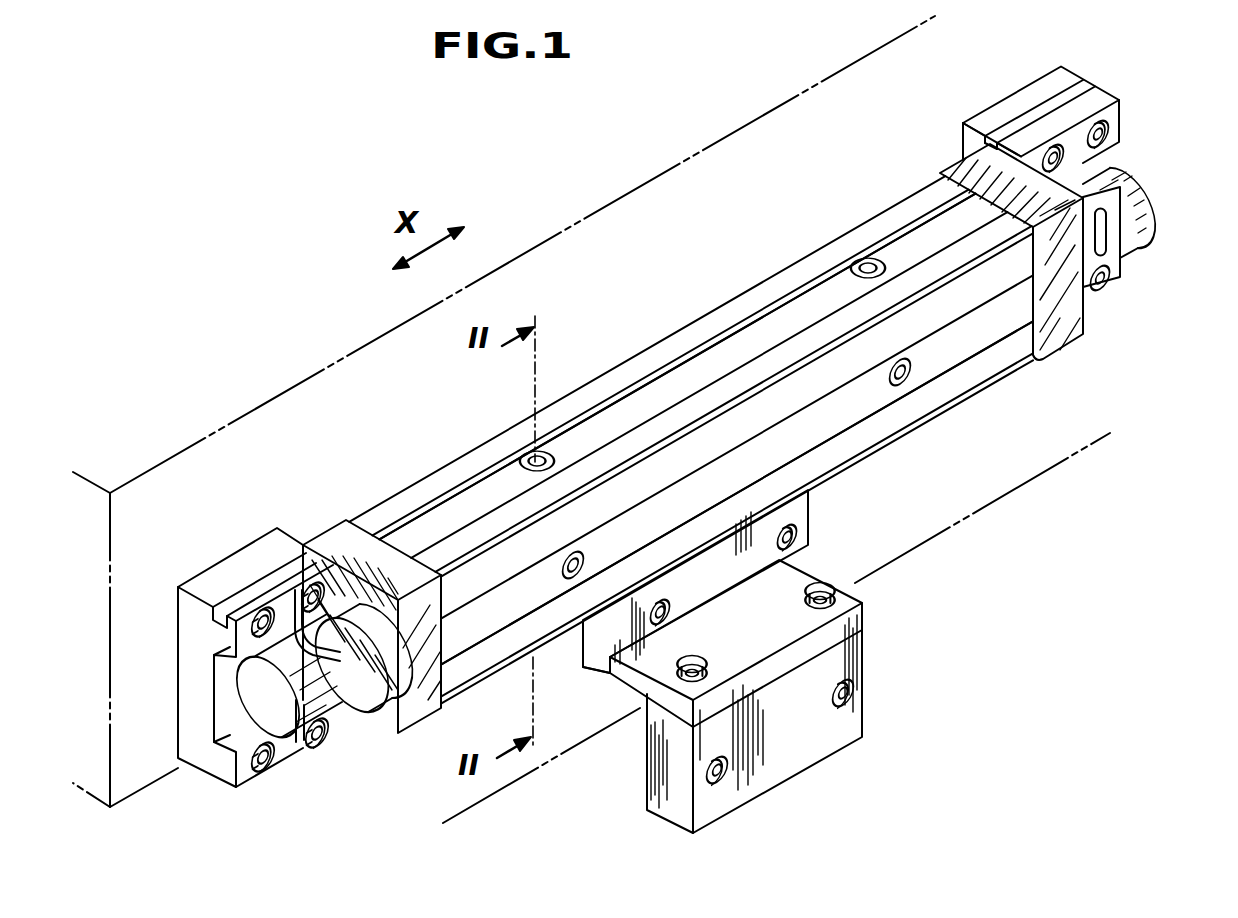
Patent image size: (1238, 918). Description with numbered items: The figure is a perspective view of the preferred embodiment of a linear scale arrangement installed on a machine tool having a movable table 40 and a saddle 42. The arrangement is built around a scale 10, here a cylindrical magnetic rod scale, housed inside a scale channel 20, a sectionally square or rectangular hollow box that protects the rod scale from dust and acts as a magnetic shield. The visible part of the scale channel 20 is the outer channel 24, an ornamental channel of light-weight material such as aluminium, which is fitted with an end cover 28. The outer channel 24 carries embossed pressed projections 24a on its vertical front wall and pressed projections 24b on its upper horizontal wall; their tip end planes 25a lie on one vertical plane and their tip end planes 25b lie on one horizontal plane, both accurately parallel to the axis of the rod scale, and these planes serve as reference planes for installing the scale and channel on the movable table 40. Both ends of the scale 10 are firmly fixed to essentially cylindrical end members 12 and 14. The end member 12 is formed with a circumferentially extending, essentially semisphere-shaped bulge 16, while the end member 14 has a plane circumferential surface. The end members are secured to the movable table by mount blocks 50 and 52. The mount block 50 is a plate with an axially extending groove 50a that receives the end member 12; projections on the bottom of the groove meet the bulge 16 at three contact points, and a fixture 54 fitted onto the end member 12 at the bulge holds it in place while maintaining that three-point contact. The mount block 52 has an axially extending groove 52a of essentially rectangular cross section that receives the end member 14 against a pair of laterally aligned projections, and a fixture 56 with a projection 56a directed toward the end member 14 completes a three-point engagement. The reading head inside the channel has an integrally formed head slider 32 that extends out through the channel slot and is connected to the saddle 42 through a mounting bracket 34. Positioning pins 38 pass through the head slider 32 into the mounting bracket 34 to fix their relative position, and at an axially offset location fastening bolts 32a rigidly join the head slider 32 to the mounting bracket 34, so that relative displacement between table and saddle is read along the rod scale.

The scale 10 is at (666, 435).
The end member 12 is at (247, 682).
The end member 14 is at (1130, 177).
The bulge 16 is at (355, 618).
The scale channel 20 is at (691, 429).
The outer channel 24 is at (623, 373).
The pressed projections 24a is at (562, 572).
The pressed projections 24b is at (853, 263).
The tip end planes 25a is at (578, 557).
The tip end planes 25b is at (873, 257).
The end cover 28 is at (327, 537).
The head slider 32 is at (738, 607).
The fastening bolts 32a is at (613, 647).
The mounting bracket 34 is at (875, 692).
The positioning pins 38 is at (668, 600).
The movable table 40 is at (239, 419).
The saddle 42 is at (1007, 497).
The mount block 50 is at (225, 636).
The groove 50a is at (223, 700).
The mount block 52 is at (1071, 107).
The groove 52a is at (1113, 150).
The fixture 54 is at (357, 693).
The fixture 56 is at (1149, 242).
The projection 56a is at (1104, 252).